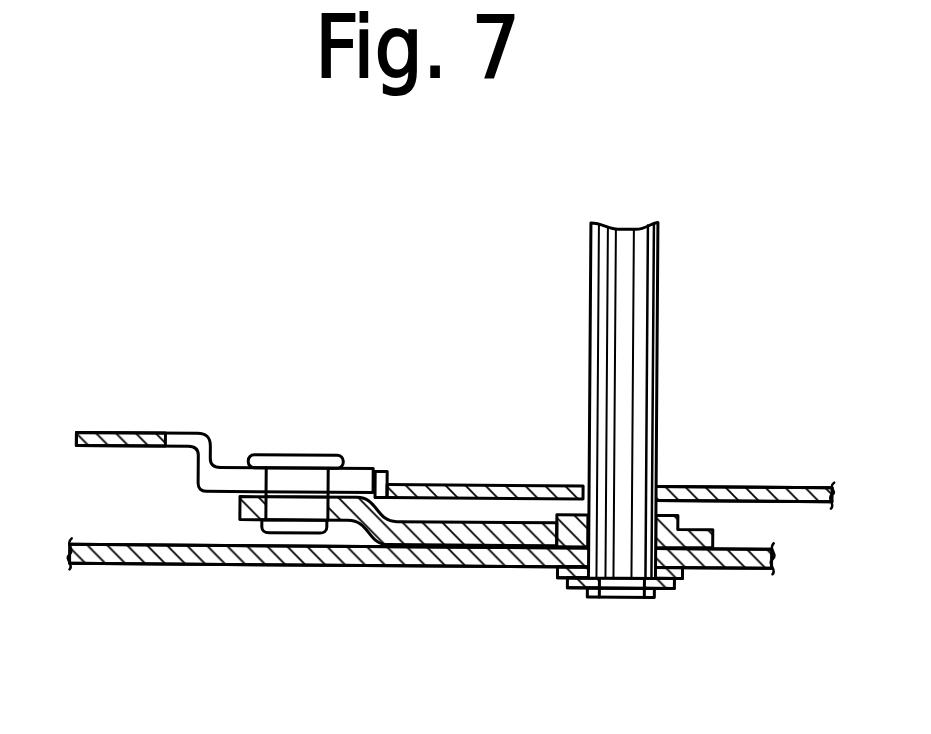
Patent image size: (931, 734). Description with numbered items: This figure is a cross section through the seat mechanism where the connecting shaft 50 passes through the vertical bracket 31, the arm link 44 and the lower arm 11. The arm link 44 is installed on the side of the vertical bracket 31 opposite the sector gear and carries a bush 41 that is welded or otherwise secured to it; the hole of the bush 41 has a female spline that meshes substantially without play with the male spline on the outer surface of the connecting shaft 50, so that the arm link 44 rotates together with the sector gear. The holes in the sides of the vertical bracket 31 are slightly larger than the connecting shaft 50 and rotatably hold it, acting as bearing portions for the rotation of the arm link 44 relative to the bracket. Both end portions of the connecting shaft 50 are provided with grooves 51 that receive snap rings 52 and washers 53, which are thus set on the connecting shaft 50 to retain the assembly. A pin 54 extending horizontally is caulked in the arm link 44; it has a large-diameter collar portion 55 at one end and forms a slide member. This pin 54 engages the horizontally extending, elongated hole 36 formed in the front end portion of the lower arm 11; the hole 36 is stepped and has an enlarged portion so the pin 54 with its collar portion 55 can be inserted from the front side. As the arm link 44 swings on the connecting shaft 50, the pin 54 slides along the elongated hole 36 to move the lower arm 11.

The lower arm 11 is at (485, 486).
The vertical bracket 31 is at (354, 567).
The elongated hole 36 is at (357, 480).
The bush 41 is at (676, 511).
The arm link 44 is at (478, 537).
The connecting shaft 50 is at (652, 338).
The groove 51 is at (614, 594).
The snap ring 52 is at (668, 587).
The washer 53 is at (684, 574).
The pin 54 is at (282, 485).
The rivet head 55 is at (320, 457).